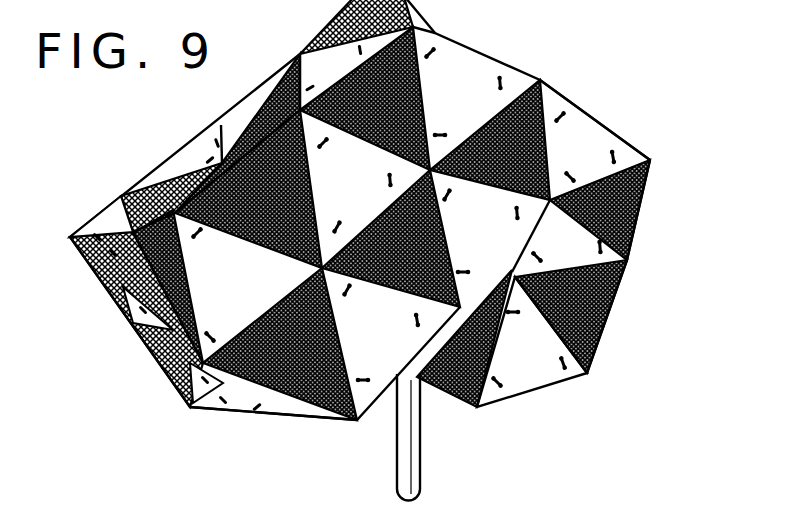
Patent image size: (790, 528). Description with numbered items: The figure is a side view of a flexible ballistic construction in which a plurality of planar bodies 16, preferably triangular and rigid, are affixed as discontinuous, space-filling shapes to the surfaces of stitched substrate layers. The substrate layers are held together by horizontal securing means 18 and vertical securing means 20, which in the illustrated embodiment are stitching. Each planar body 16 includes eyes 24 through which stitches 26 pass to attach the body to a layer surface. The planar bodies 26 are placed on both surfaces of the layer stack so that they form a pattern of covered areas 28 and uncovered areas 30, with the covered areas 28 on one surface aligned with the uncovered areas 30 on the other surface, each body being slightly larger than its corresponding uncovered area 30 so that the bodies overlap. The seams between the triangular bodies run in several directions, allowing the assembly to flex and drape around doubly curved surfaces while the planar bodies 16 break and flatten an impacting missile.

The planar body 16 is at (533, 374).
The horizontal securing means 18 is at (603, 330).
The vertical securing means 20 is at (620, 297).
The eye 24 is at (261, 406).
The stitch 26 is at (92, 240).
The covered area 28 is at (592, 127).
The uncovered area 30 is at (643, 200).